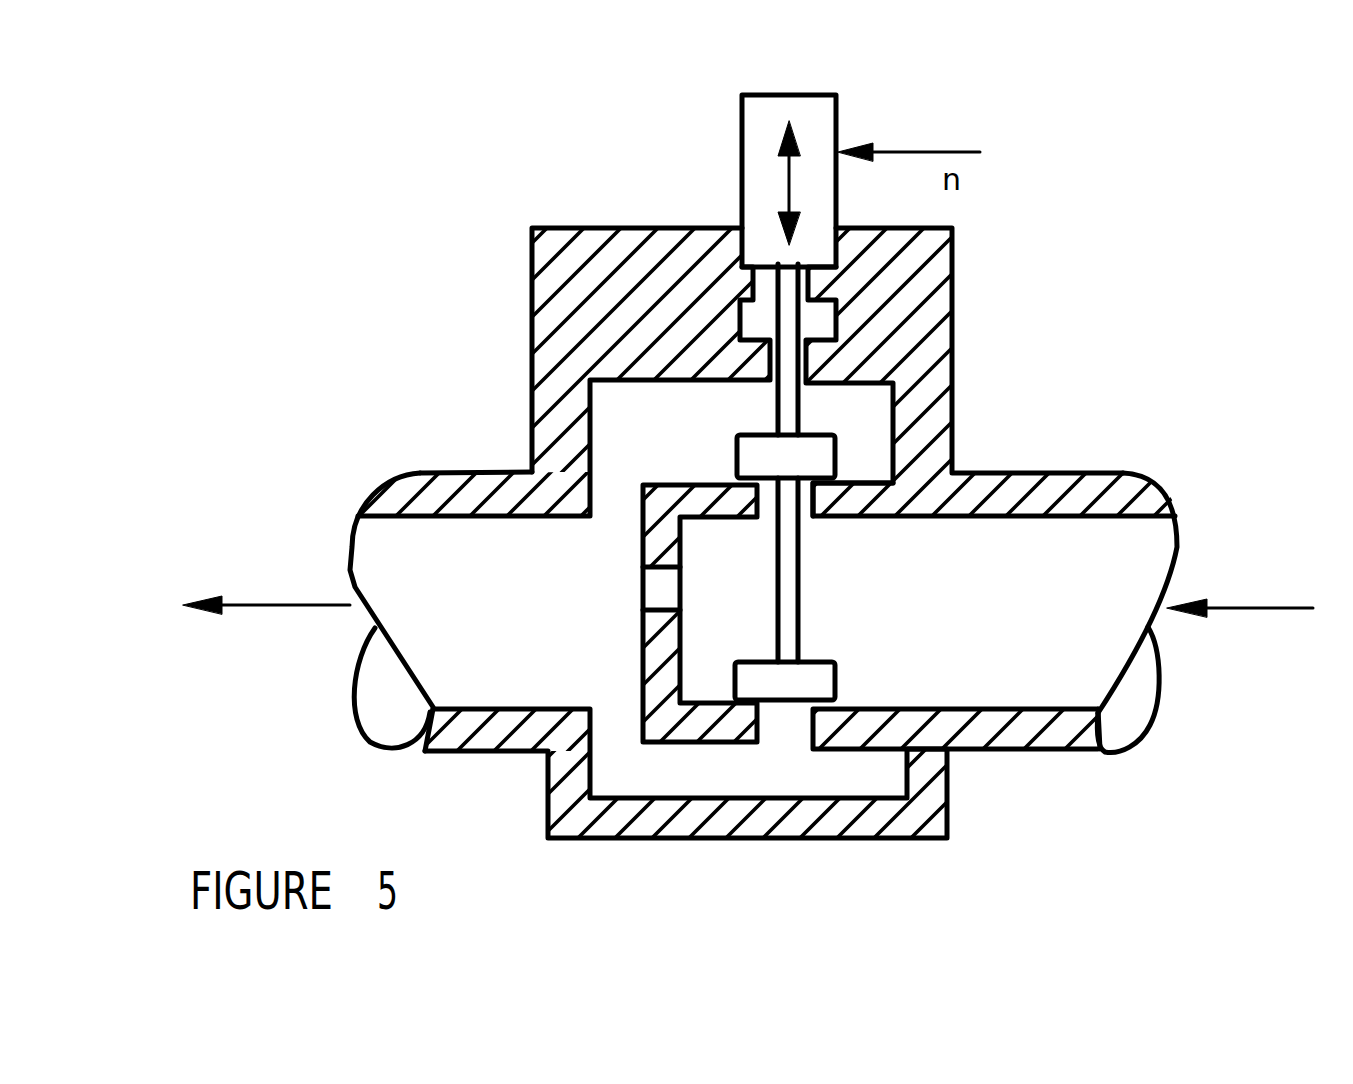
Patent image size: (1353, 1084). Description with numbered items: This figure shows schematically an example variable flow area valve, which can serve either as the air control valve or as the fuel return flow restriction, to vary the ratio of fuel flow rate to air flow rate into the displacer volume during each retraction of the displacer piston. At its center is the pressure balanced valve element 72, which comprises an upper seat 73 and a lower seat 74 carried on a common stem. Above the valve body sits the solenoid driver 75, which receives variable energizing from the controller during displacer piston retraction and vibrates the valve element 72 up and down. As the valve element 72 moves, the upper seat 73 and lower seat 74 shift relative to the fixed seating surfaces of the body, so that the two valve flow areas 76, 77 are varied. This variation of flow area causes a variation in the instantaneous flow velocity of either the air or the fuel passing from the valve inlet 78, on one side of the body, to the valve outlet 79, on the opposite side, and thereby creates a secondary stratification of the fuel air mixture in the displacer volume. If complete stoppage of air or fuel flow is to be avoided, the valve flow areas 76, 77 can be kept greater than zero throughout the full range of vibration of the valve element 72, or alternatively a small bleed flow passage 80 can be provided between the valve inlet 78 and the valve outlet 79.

The pressure balanced valve element 72 is at (783, 597).
The upper seat 73 is at (837, 472).
The lower seat 74 is at (840, 712).
The solenoid driver 75 is at (762, 152).
The valve flow area 76 is at (732, 478).
The valve flow area 77 is at (757, 700).
The valve inlet 78 is at (1213, 607).
The valve outlet 79 is at (308, 603).
The bleed flow passage 80 is at (658, 587).